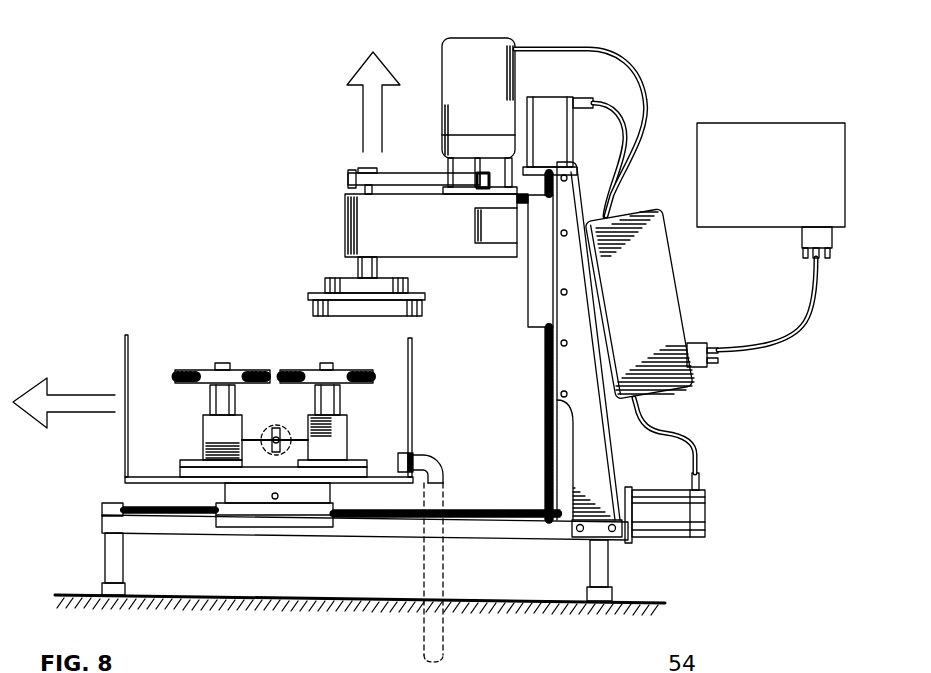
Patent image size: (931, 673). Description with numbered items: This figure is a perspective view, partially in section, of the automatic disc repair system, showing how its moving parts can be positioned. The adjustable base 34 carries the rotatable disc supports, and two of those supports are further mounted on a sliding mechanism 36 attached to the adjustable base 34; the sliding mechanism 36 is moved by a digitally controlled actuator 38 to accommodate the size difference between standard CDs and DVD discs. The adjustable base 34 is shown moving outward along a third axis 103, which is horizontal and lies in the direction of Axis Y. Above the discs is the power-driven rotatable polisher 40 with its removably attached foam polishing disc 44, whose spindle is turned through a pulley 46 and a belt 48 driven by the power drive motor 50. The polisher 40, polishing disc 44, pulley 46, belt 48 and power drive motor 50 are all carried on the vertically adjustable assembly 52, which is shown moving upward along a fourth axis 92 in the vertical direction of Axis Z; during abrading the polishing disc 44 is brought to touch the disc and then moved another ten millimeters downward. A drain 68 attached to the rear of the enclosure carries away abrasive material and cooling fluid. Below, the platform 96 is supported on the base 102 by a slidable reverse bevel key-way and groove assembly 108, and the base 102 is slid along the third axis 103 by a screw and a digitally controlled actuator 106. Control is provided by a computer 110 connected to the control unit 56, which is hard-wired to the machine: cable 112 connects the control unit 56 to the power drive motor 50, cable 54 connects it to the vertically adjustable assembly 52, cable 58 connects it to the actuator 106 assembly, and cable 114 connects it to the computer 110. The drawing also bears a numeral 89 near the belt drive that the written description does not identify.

The adjustable base 34 is at (178, 470).
The sliding mechanism 36 is at (184, 460).
The actuator 38 is at (276, 425).
The power-driven rotatable polisher 40 is at (312, 290).
The polishing disc 44 is at (312, 307).
The pulley 46 is at (348, 172).
The belt 48 is at (405, 173).
The power drive motor 50 is at (517, 40).
The vertically adjustable assembly 52 is at (533, 288).
The cable 54 is at (625, 125).
The control unit 56 is at (685, 287).
The cable 58 is at (682, 441).
The drain 68 is at (443, 458).
The pivot block 89 is at (470, 177).
The fourth axis 92 is at (391, 40).
The platform 96 is at (225, 494).
The base 102 is at (102, 522).
The third axis 103 is at (47, 378).
The actuator 106 is at (708, 522).
The slidable reverse bevel key-way and groove assembly 108 is at (217, 525).
The computer 110 is at (742, 123).
The cable 112 is at (596, 47).
The cable 114 is at (800, 326).